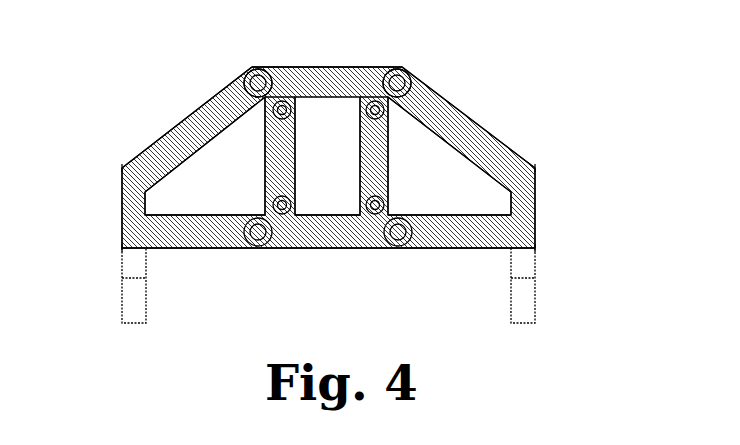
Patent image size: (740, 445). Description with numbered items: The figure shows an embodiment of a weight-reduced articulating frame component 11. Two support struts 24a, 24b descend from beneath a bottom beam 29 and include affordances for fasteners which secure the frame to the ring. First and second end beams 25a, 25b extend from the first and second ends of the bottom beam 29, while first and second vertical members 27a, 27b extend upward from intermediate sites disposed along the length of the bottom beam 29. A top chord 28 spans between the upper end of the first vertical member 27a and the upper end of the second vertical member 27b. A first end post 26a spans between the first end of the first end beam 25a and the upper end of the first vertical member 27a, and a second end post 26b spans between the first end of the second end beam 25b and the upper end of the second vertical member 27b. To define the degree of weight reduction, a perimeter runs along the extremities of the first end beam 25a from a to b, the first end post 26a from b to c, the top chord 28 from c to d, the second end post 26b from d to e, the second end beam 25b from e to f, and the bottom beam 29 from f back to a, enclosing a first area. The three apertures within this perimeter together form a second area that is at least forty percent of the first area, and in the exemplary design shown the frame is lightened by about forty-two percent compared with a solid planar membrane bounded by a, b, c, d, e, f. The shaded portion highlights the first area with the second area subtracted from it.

The frame structure 11 is at (574, 64).
The top chord 28 is at (323, 67).
The first end post 26a is at (172, 128).
The second end post 26b is at (458, 105).
The first end beam 25a is at (122, 205).
The second end beam 25b is at (538, 203).
The first vertical member 27a is at (265, 165).
The second vertical member 27b is at (360, 182).
The bottom beam 29 is at (458, 250).
The support strut 24a is at (147, 300).
The support strut 24b is at (510, 300).
The perimeter point a is at (122, 250).
The perimeter point b is at (122, 168).
The perimeter point c is at (250, 70).
The perimeter point d is at (405, 70).
The perimeter point e is at (535, 168).
The perimeter point f is at (536, 249).